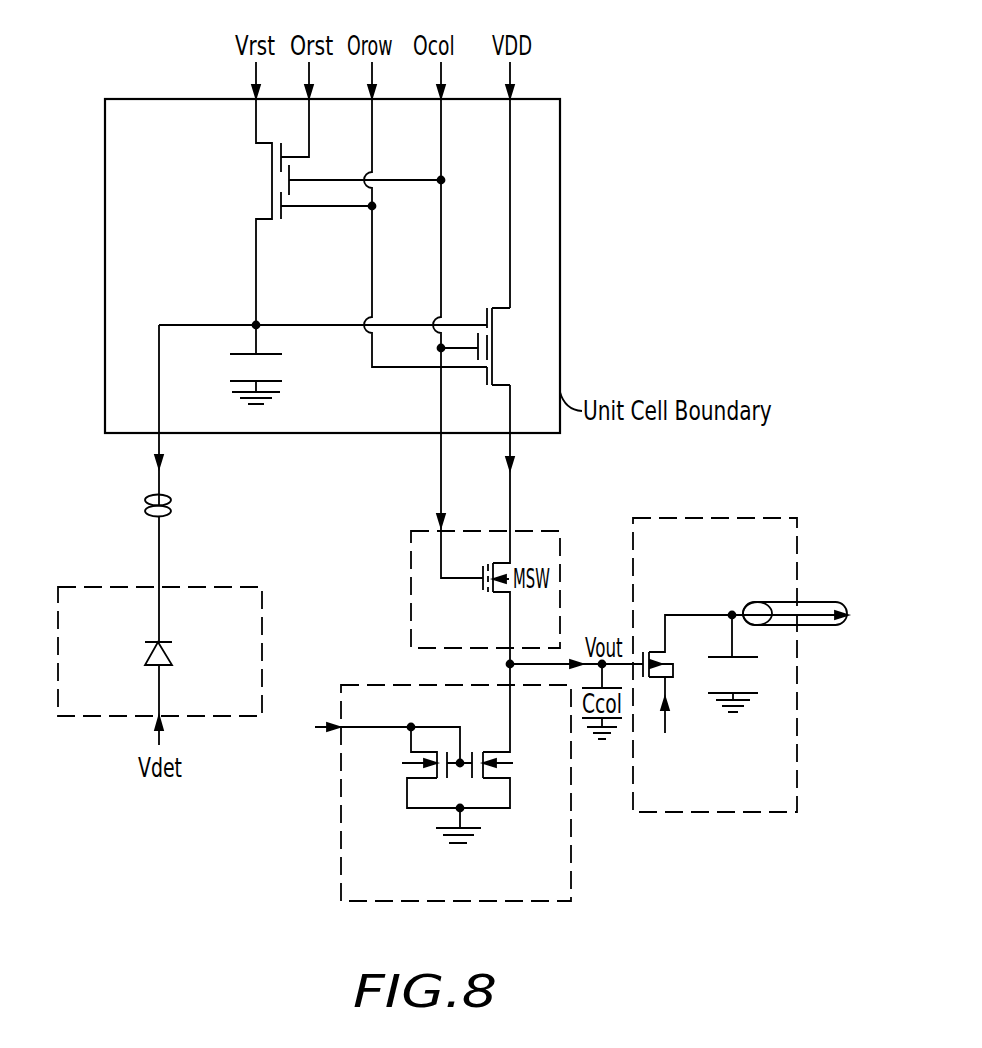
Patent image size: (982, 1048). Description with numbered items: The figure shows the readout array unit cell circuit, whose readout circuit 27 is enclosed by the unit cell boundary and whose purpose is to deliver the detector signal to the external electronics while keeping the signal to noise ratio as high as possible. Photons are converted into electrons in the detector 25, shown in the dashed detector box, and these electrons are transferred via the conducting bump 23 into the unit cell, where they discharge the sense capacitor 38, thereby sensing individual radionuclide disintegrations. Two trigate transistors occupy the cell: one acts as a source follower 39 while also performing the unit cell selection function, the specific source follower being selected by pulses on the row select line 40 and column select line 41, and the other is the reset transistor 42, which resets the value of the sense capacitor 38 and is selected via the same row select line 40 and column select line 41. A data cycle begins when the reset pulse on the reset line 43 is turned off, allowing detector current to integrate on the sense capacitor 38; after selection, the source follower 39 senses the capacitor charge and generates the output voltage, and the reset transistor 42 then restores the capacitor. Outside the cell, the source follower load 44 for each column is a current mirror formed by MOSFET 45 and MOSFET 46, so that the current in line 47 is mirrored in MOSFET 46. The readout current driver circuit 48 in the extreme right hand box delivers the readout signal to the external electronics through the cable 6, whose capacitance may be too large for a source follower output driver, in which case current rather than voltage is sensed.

The cable 6 is at (830, 601).
The conducting bump 23 is at (172, 502).
The detector 25 is at (262, 627).
The readout circuit 27 is at (560, 247).
The sense capacitor 38 is at (270, 366).
The source follower 39 is at (505, 348).
The row select line 40 is at (372, 108).
The column select line 41 is at (443, 104).
The reset transistor 42 is at (261, 181).
The reset line 43 is at (311, 100).
The source follower load 44 is at (571, 852).
The MOSFET 45 is at (385, 784).
The MOSFET 46 is at (558, 784).
The line 47 is at (358, 727).
The readout current driver circuit 48 is at (797, 814).